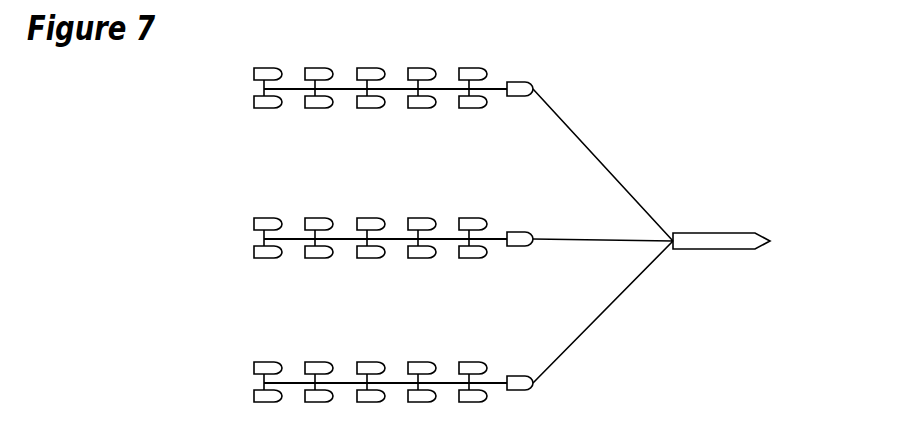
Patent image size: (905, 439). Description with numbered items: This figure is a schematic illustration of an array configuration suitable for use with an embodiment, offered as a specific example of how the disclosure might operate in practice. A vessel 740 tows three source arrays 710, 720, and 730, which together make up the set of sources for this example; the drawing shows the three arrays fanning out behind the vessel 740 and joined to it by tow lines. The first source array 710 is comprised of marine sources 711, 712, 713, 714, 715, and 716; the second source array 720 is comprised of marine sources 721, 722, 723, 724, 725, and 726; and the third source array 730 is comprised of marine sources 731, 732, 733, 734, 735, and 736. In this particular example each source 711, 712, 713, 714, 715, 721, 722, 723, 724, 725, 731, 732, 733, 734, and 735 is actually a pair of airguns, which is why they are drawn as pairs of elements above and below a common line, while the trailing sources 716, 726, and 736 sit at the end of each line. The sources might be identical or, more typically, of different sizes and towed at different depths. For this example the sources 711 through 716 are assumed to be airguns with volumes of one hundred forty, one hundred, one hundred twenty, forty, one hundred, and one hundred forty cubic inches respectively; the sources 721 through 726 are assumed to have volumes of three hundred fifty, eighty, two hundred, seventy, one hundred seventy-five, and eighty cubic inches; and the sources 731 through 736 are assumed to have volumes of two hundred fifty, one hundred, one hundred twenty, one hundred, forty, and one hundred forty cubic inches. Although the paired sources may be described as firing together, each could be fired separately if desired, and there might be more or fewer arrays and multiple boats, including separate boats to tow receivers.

The source array 710 is at (197, 61).
The marine source 711 is at (267, 68).
The marine source 712 is at (318, 68).
The marine source 713 is at (370, 68).
The marine source 714 is at (421, 68).
The marine source 715 is at (472, 68).
The marine source 716 is at (527, 82).
The source array 720 is at (197, 211).
The marine source 721 is at (267, 218).
The marine source 722 is at (318, 218).
The marine source 723 is at (370, 218).
The marine source 724 is at (421, 218).
The marine source 725 is at (472, 218).
The marine source 726 is at (527, 232).
The source array 730 is at (197, 356).
The marine source 731 is at (267, 362).
The marine source 732 is at (318, 362).
The marine source 733 is at (370, 362).
The marine source 734 is at (421, 362).
The marine source 735 is at (472, 362).
The marine source 736 is at (518, 376).
The vessel 740 is at (757, 232).